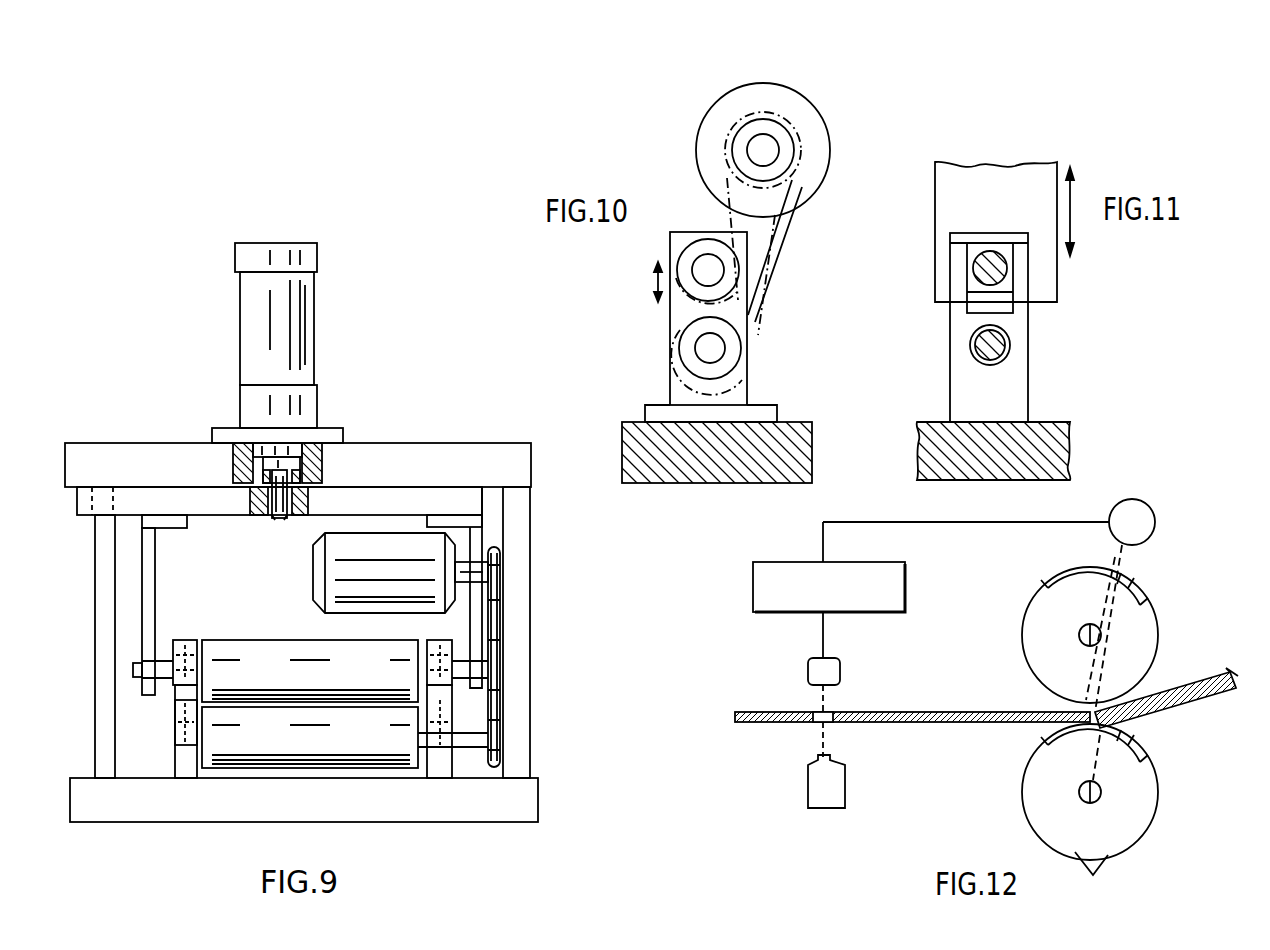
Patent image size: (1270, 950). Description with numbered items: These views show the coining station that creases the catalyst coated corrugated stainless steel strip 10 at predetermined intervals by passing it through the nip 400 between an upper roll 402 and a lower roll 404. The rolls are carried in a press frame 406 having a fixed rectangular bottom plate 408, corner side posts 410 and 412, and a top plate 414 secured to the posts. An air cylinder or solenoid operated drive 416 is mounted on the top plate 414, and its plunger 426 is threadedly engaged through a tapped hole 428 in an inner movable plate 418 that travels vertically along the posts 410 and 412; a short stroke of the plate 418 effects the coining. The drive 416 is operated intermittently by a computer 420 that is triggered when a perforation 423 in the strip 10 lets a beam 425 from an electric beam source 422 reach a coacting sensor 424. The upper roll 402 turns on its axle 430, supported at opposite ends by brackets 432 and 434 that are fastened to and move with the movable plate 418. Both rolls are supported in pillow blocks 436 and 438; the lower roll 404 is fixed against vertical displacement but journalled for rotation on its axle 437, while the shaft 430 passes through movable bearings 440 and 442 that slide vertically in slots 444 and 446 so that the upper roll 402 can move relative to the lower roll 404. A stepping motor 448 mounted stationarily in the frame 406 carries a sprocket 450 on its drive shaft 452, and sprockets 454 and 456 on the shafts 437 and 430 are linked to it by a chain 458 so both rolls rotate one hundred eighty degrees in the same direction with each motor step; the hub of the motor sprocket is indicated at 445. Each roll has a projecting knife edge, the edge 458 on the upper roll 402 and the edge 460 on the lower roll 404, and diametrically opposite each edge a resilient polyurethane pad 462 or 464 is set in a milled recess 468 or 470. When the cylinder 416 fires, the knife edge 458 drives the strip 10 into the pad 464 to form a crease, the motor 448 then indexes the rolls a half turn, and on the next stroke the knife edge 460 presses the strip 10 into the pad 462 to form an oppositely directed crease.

In FIG. 12, the strip 10 is at (922, 722).
In FIG. 9, the nip 400 is at (275, 702).
In FIG. 9, the upper roll 402 is at (362, 672).
In FIG. 12, the upper roll 402 is at (1158, 640).
In FIG. 9, the lower roll 404 is at (310, 737).
In FIG. 12, the lower roll 404 is at (1158, 785).
In FIG. 9, the press frame 406 is at (86, 631).
In FIG. 9, the fixed bottom plate 408 is at (352, 808).
In FIG. 10, the fixed bottom plate 408 is at (655, 470).
In FIG. 11, the fixed bottom plate 408 is at (1038, 435).
In FIG. 9, the side post 410 is at (100, 688).
In FIG. 9, the side post 412 is at (520, 675).
In FIG. 9, the top plate 414 is at (395, 463).
In FIG. 9, the air cylinder 416 is at (300, 350).
In FIG. 9, the movable plate 418 is at (210, 508).
In FIG. 12, the computer 420 is at (888, 590).
In FIG. 12, the electric beam source 422 is at (822, 797).
In FIG. 12, the perforation 423 is at (828, 722).
In FIG. 12, the sensor 424 is at (825, 672).
In FIG. 12, the beam 425 is at (823, 730).
In FIG. 9, the plunger 426 is at (276, 505).
In FIG. 9, the tapped hole 428 is at (303, 505).
In FIG. 9, the axle 430 is at (165, 668).
In FIG. 10, the axle 430 is at (708, 272).
In FIG. 11, the axle 430 is at (1000, 268).
In FIG. 9, the bracket 432 is at (155, 597).
In FIG. 9, the bracket 434 is at (475, 545).
In FIG. 11, the bracket 434 is at (953, 203).
In FIG. 9, the pillow block 436 is at (188, 765).
In FIG. 9, the axle 437 is at (170, 748).
In FIG. 10, the axle 437 is at (710, 348).
In FIG. 11, the axle 437 is at (995, 348).
In FIG. 9, the pillow block 438 is at (440, 762).
In FIG. 10, the pillow block 438 is at (735, 400).
In FIG. 11, the pillow block 438 is at (1010, 385).
In FIG. 9, the movable bearing 440 is at (190, 640).
In FIG. 9, the movable bearing 442 is at (435, 643).
In FIG. 11, the movable bearing 442 is at (1003, 287).
In FIG. 9, the slot 444 is at (182, 705).
In FIG. 10, the pulley hub 445 is at (812, 155).
In FIG. 9, the slot 446 is at (440, 690).
In FIG. 11, the slot 446 is at (1000, 310).
In FIG. 9, the stepping motor 448 is at (330, 603).
In FIG. 12, the stepping motor 448 is at (1135, 520).
In FIG. 10, the sprocket 450 is at (780, 130).
In FIG. 10, the drive shaft 452 is at (770, 152).
In FIG. 10, the sprocket 454 is at (700, 350).
In FIG. 10, the sprocket 456 is at (690, 280).
In FIG. 10, the chain 458 is at (775, 290).
In FIG. 12, the chain 458 is at (1083, 713).
In FIG. 12, the knife edge 460 is at (1098, 860).
In FIG. 12, the resilient pad 462 is at (1125, 583).
In FIG. 12, the resilient pad 464 is at (1135, 738).
In FIG. 12, the recess 468 is at (1143, 603).
In FIG. 12, the recess 470 is at (1143, 765).